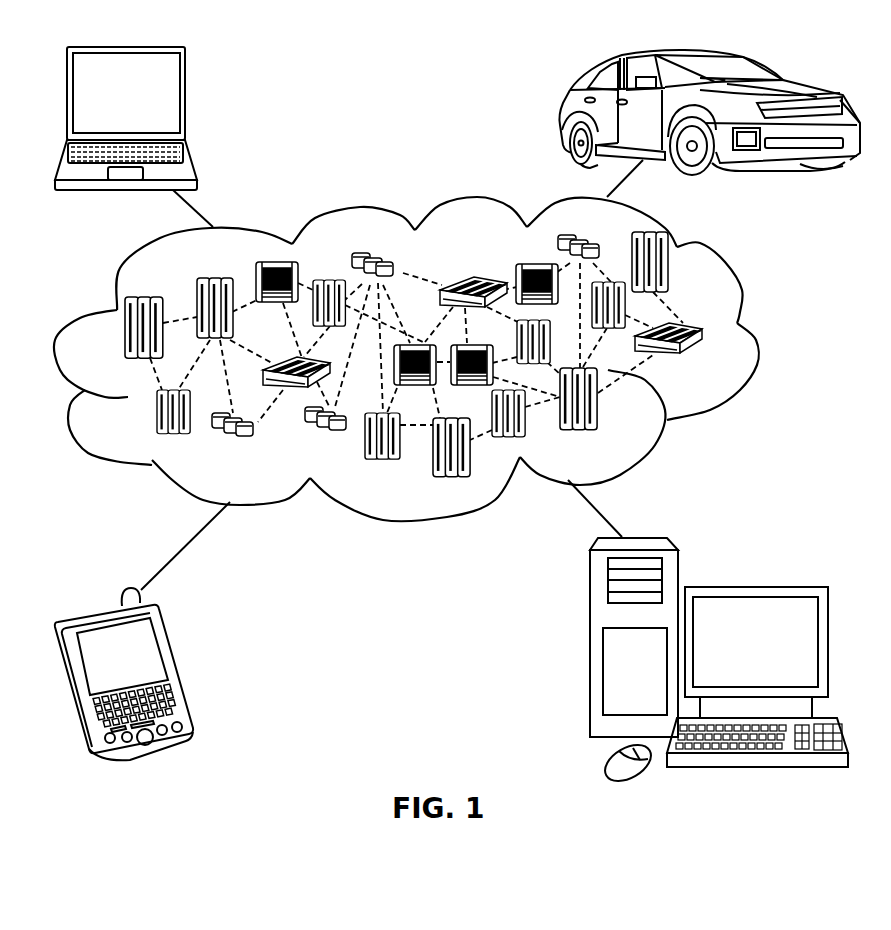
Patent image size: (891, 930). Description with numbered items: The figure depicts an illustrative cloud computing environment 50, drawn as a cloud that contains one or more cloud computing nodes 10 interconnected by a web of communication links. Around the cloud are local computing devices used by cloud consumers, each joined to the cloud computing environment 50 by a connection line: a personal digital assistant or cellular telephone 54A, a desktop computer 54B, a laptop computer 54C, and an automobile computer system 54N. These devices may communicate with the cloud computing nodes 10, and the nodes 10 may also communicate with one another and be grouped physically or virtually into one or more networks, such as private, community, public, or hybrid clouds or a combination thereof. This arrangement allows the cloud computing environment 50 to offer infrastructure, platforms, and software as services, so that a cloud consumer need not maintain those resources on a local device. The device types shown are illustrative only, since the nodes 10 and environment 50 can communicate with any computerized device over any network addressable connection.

The cloud computing nodes 10 is at (708, 364).
The cloud computing environment 50 is at (753, 337).
The personal digital assistant (PDA) or cellular telephone 54A is at (179, 666).
The desktop computer 54B is at (752, 587).
The laptop computer 54C is at (187, 98).
The automobile computer system 54N is at (562, 114).